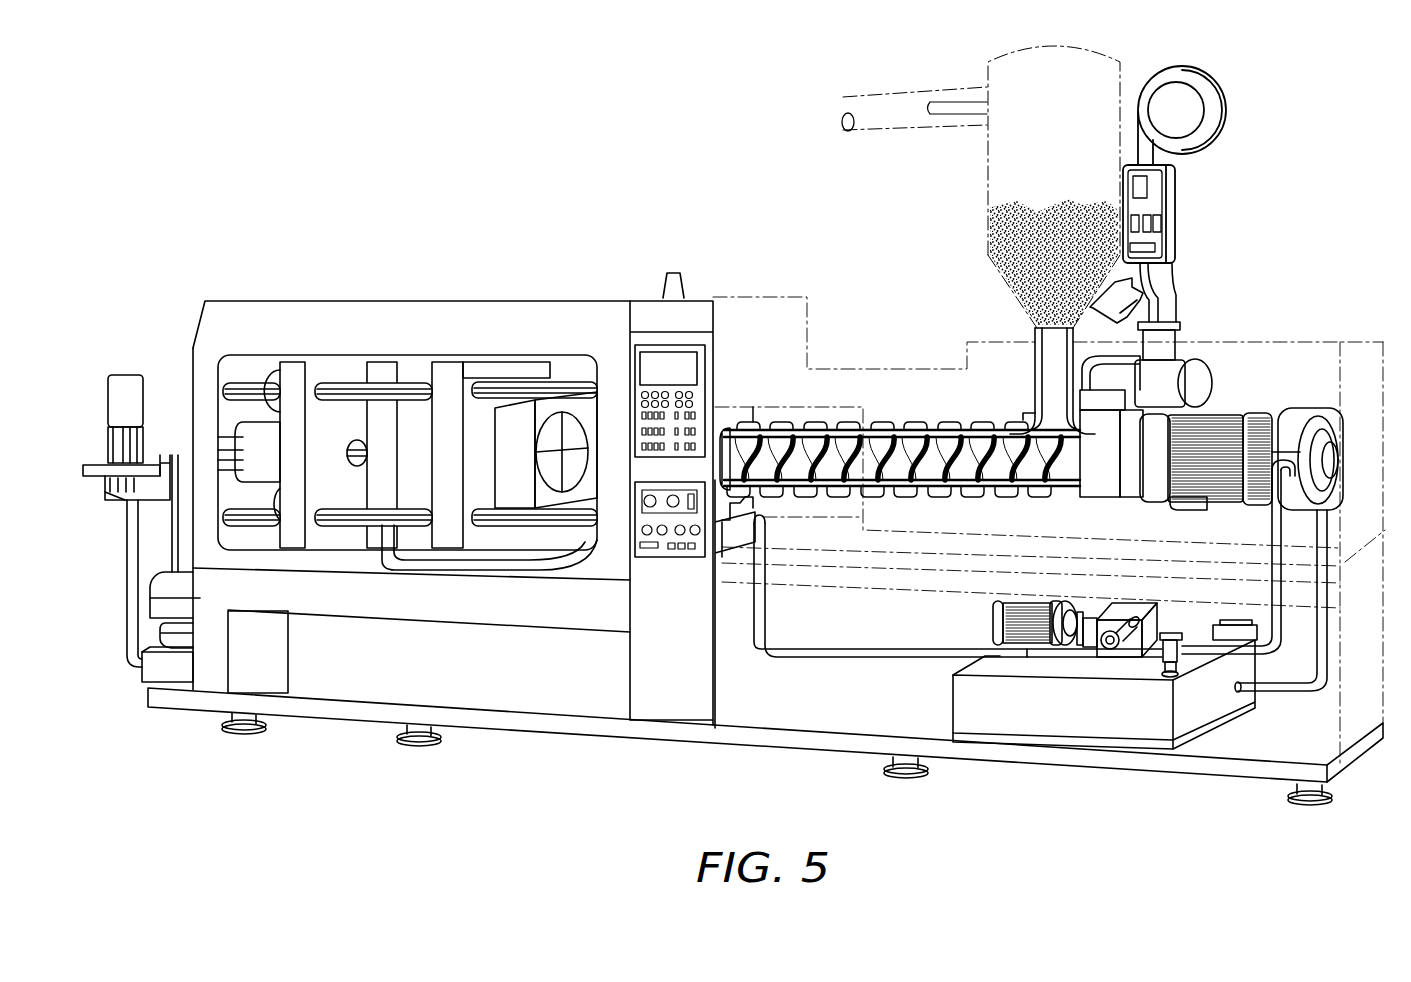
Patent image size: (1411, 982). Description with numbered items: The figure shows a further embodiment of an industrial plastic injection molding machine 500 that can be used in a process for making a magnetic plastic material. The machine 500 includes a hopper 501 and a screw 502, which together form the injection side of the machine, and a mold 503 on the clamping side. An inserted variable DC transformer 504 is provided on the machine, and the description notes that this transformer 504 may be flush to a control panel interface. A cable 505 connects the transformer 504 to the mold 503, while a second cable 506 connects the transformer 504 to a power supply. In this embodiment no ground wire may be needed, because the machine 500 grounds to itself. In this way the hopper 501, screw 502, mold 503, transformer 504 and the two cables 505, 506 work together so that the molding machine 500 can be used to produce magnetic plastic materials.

The plastic injection molding machine 500 is at (183, 174).
The hopper 501 is at (988, 143).
The screw 502 is at (873, 427).
The mold 503 is at (378, 408).
The inserted variable DC transformer 504 is at (664, 545).
The cable 505 is at (442, 563).
The cable 506 is at (853, 656).